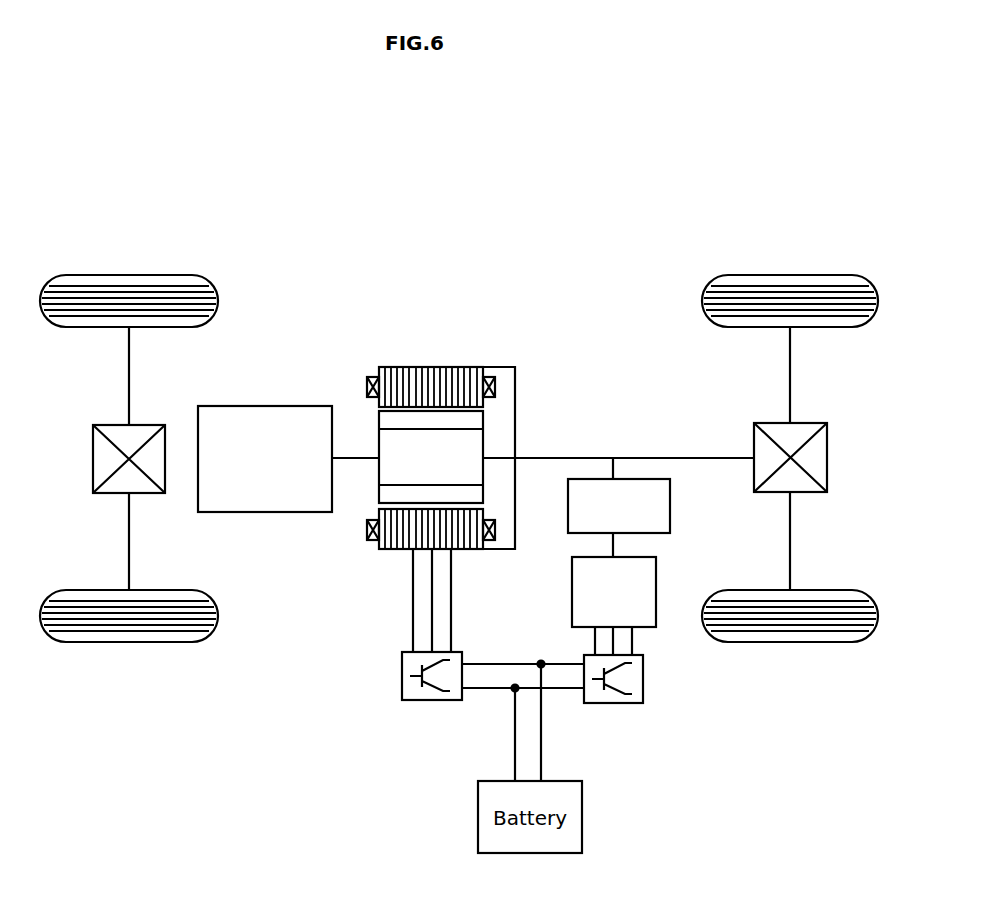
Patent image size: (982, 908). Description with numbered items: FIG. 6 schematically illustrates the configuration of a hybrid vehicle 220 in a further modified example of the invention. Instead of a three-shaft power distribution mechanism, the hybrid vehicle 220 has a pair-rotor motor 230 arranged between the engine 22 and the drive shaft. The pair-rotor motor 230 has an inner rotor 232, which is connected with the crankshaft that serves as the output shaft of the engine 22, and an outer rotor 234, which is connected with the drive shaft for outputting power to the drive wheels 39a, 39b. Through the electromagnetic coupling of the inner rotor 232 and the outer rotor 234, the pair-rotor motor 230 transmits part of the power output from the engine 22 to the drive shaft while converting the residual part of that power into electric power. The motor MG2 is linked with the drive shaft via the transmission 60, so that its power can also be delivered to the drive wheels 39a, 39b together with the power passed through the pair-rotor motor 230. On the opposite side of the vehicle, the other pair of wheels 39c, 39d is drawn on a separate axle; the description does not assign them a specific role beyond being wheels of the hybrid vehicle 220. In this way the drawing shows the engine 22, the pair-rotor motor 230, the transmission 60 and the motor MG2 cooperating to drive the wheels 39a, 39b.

The hybrid vehicle 220 is at (513, 163).
The pair-rotor motor 230 is at (363, 223).
The inner rotor 232 is at (379, 440).
The outer rotor 234 is at (430, 367).
The engine 22 is at (265, 512).
The transmission 60 is at (587, 479).
The drive wheel 39a is at (790, 275).
The drive wheel 39b is at (790, 642).
The front left wheel 39c is at (129, 275).
The rear left wheel 39d is at (129, 642).
The motor MG2 is at (572, 590).